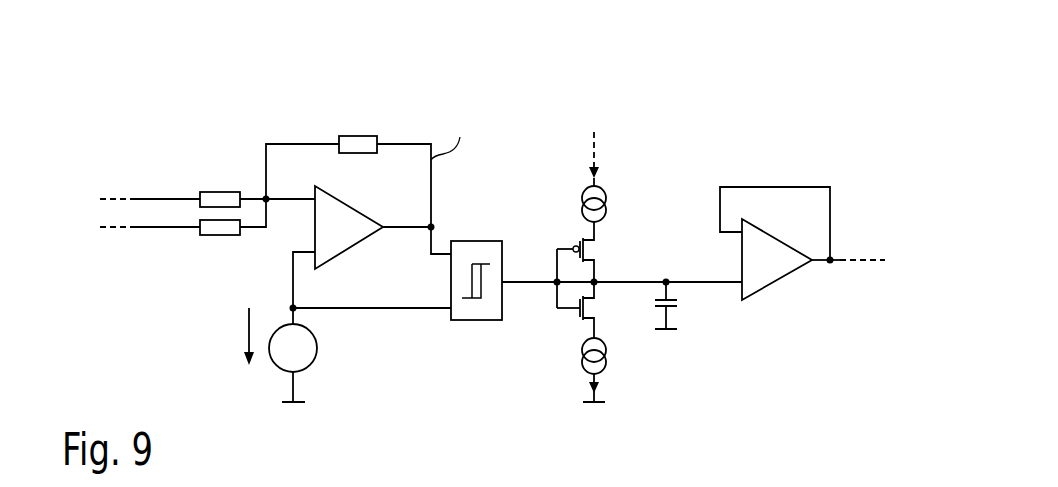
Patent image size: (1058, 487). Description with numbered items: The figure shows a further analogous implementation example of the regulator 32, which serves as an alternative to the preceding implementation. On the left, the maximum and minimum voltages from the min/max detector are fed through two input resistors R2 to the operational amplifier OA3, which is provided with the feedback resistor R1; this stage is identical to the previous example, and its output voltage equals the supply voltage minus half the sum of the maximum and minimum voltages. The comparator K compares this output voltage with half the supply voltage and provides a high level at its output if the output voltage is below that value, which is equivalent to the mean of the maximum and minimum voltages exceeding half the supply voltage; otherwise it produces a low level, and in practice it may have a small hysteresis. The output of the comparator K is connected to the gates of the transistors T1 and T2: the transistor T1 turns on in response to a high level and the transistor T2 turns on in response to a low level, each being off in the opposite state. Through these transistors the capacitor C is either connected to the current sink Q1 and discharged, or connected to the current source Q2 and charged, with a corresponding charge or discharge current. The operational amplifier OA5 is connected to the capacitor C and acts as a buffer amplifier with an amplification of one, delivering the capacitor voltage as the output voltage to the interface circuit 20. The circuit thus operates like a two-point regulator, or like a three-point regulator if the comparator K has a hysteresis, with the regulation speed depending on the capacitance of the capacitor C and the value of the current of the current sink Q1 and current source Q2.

The regulator 32 is at (618, 70).
The interface circuit 20 is at (880, 291).
The resistor R1 is at (358, 131).
The resistor R2 is at (220, 214).
The operational amplifier OA3 is at (349, 233).
The comparator K is at (470, 240).
The transistor T1 is at (588, 310).
The transistor T2 is at (588, 252).
The current sink Q1 is at (583, 351).
The current source Q2 is at (582, 200).
The capacitor C is at (658, 305).
The operational amplifier OA5 is at (777, 267).